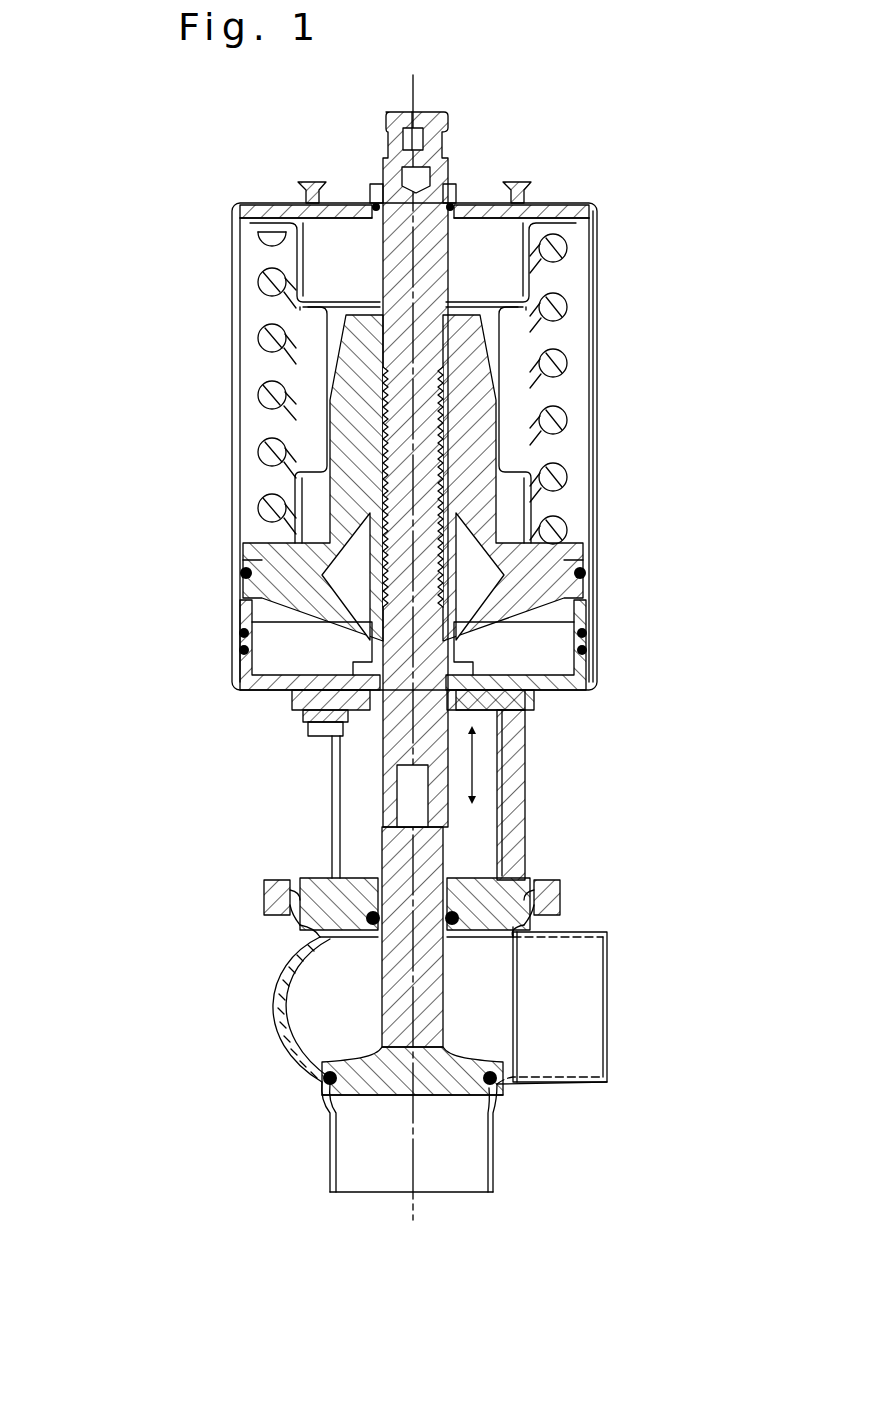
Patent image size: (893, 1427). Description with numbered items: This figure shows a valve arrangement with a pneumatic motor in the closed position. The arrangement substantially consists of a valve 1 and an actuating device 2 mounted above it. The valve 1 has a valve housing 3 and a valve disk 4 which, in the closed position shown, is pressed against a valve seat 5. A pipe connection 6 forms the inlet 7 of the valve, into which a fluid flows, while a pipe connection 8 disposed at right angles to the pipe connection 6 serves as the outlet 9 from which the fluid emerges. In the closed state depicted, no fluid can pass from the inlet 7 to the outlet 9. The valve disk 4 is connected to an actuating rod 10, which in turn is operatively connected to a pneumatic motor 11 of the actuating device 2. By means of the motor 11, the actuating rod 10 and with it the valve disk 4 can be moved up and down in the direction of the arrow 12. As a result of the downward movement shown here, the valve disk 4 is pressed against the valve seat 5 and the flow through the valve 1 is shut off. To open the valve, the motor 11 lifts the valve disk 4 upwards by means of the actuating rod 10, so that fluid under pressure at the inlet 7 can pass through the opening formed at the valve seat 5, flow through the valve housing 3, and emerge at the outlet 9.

The valve 1 is at (272, 868).
The actuating device 2 is at (226, 375).
The valve housing 3 is at (280, 1000).
The valve disk 4 is at (443, 1083).
The valve seat 5 is at (322, 1091).
The pipe connection 6 is at (330, 1172).
The inlet 7 is at (372, 1193).
The pipe connection 8 is at (608, 1082).
The outlet 9 is at (608, 972).
The actuating rod 10 is at (440, 842).
The pneumatic motor 11 is at (594, 555).
The arrow 12 is at (478, 763).